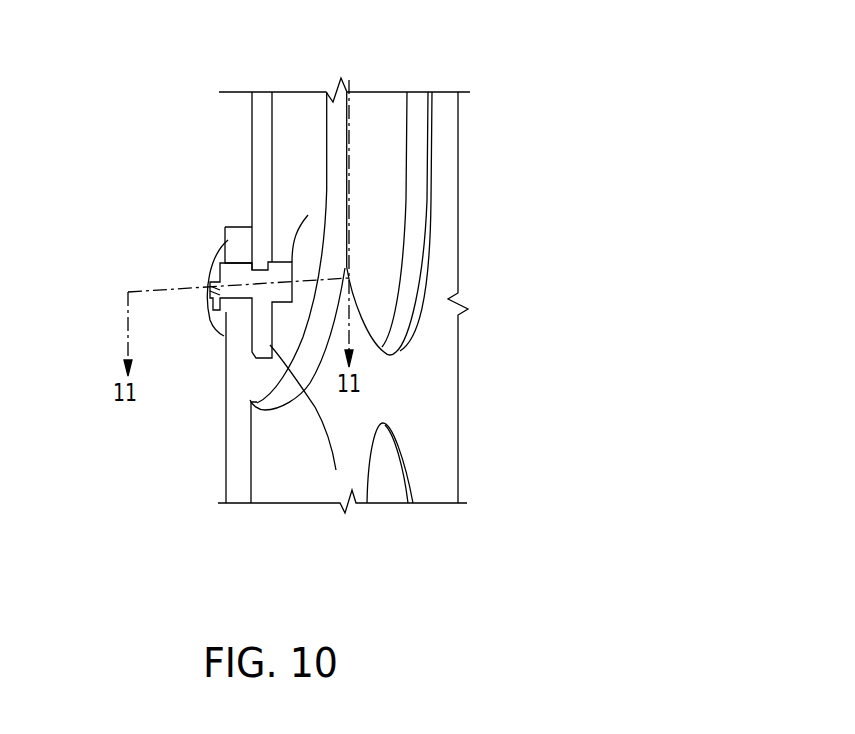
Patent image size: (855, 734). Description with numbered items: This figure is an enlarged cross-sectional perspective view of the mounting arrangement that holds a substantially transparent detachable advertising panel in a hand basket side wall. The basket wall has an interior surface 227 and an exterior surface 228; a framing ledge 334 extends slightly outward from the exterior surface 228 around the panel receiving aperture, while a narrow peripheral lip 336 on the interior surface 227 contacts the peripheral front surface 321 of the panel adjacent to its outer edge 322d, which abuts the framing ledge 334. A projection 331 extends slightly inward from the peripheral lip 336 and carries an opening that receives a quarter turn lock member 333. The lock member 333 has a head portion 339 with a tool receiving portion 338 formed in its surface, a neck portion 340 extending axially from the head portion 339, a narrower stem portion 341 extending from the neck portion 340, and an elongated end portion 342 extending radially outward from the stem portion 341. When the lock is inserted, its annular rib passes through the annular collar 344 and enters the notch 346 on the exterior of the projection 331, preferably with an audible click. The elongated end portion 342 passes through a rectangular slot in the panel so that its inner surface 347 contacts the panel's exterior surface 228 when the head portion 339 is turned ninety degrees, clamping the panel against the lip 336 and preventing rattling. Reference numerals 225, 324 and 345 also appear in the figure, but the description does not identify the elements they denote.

The flange ring 225 is at (403, 490).
The interior surface 227 is at (216, 488).
The exterior surface 228 is at (377, 394).
The peripheral front surface 321 is at (275, 317).
The outer edge 322d is at (268, 383).
The junction 324 is at (250, 333).
The projection 331 is at (228, 242).
The quarter turn lock member 333 is at (215, 262).
The framing ledge 334 is at (237, 347).
The peripheral lip 336 is at (257, 405).
The tool receiving portion 338 is at (212, 283).
The head portion 339 is at (222, 310).
The neck portion 340 is at (252, 403).
The stem portion 341 is at (270, 260).
The elongated end portion 342 is at (292, 262).
The annular collar 344 is at (228, 256).
The inner wall 345 is at (226, 322).
The notch 346 is at (258, 274).
The inner surface 347 is at (251, 227).